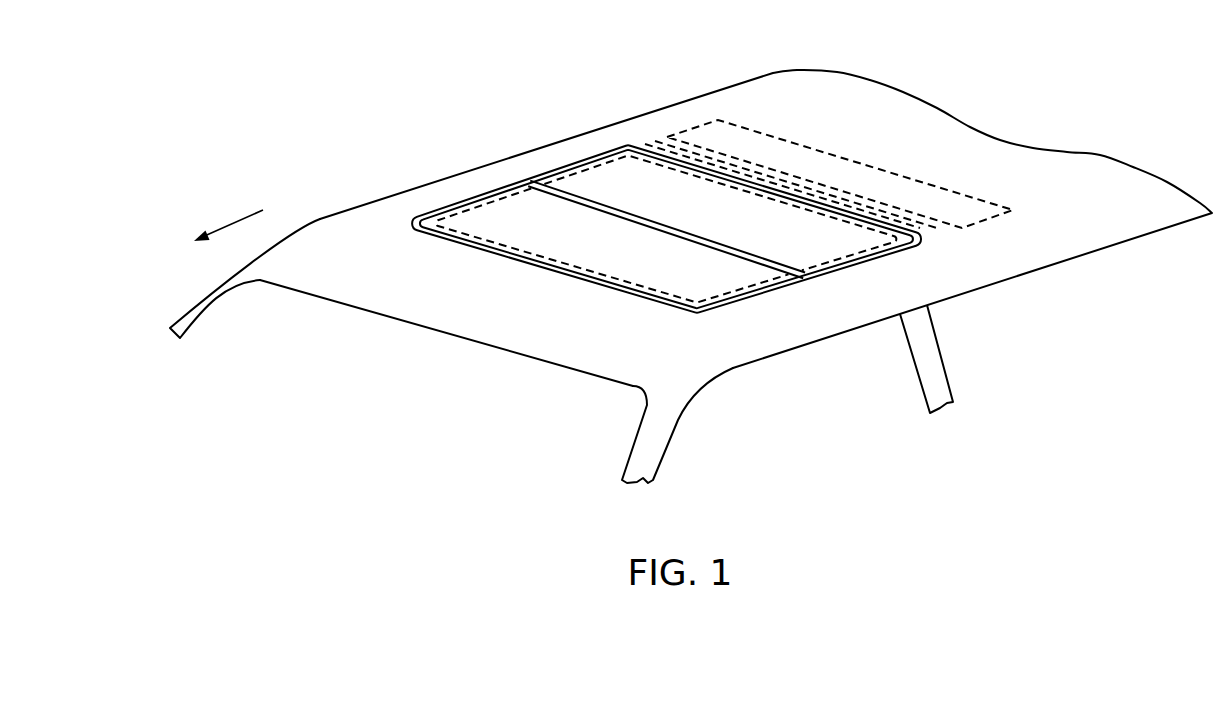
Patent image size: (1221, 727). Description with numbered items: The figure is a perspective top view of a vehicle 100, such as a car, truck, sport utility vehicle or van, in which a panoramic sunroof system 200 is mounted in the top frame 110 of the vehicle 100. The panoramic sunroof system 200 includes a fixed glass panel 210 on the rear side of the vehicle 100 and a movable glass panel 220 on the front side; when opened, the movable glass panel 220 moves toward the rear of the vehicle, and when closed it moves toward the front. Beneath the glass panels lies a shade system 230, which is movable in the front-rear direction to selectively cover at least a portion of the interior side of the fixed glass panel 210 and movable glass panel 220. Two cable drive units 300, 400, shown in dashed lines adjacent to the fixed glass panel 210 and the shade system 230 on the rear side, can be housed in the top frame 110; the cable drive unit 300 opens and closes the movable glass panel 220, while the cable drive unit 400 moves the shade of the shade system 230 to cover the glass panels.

The vehicle 100 is at (316, 140).
The top frame 110 is at (1032, 245).
The panoramic sunroof system 200 is at (706, 328).
The fixed glass panel 210 is at (605, 180).
The movable glass panel 220 is at (523, 263).
The shade system 230 is at (777, 287).
The cable drive unit 300 is at (715, 138).
The cable drive unit 400 is at (792, 130).